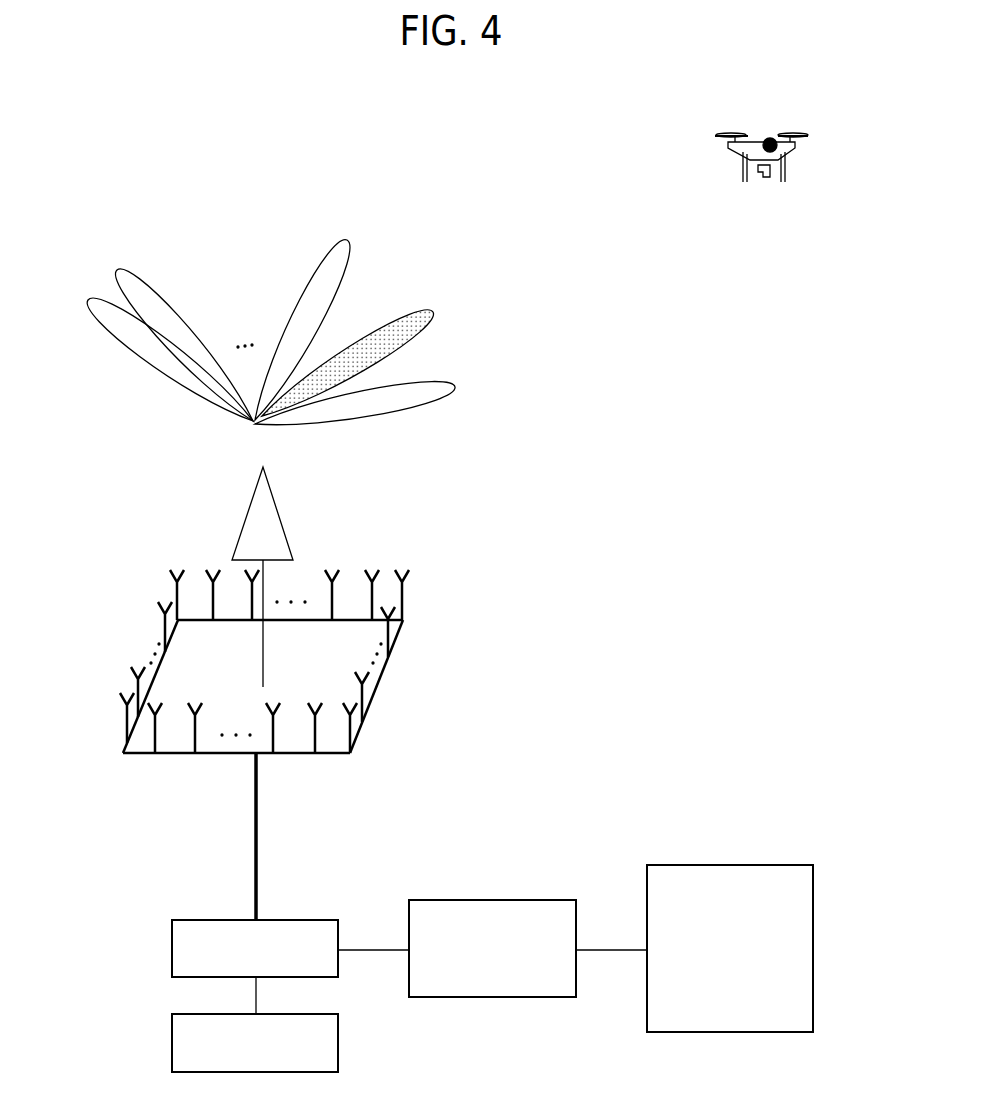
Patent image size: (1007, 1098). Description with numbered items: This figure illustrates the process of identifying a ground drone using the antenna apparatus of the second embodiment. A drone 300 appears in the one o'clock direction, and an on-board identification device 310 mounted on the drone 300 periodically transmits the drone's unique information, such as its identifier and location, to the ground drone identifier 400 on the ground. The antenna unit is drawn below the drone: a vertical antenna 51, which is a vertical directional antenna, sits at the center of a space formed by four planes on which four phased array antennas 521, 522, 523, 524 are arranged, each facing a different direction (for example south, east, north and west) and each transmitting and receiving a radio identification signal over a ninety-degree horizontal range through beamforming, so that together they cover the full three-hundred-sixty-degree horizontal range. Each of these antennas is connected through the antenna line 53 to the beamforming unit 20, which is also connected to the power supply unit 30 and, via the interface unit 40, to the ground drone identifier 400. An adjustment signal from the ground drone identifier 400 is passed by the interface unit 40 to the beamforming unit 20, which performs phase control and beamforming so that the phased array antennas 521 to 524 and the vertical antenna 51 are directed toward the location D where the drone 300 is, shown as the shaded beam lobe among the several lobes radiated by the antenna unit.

The drone 300 is at (723, 136).
The on-board identification device 310 is at (769, 138).
The location where the drone is D is at (427, 313).
The vertical antenna 51 is at (282, 512).
The phased array antenna 521 is at (302, 755).
The phased array antenna 522 is at (380, 685).
The phased array antenna 523 is at (368, 573).
The phased array antenna 524 is at (133, 697).
The antenna line 53 is at (258, 843).
The beamforming unit 20 is at (172, 948).
The power supply unit 30 is at (172, 1042).
The interface unit 40 is at (492, 898).
The ground drone identifier 400 is at (730, 863).